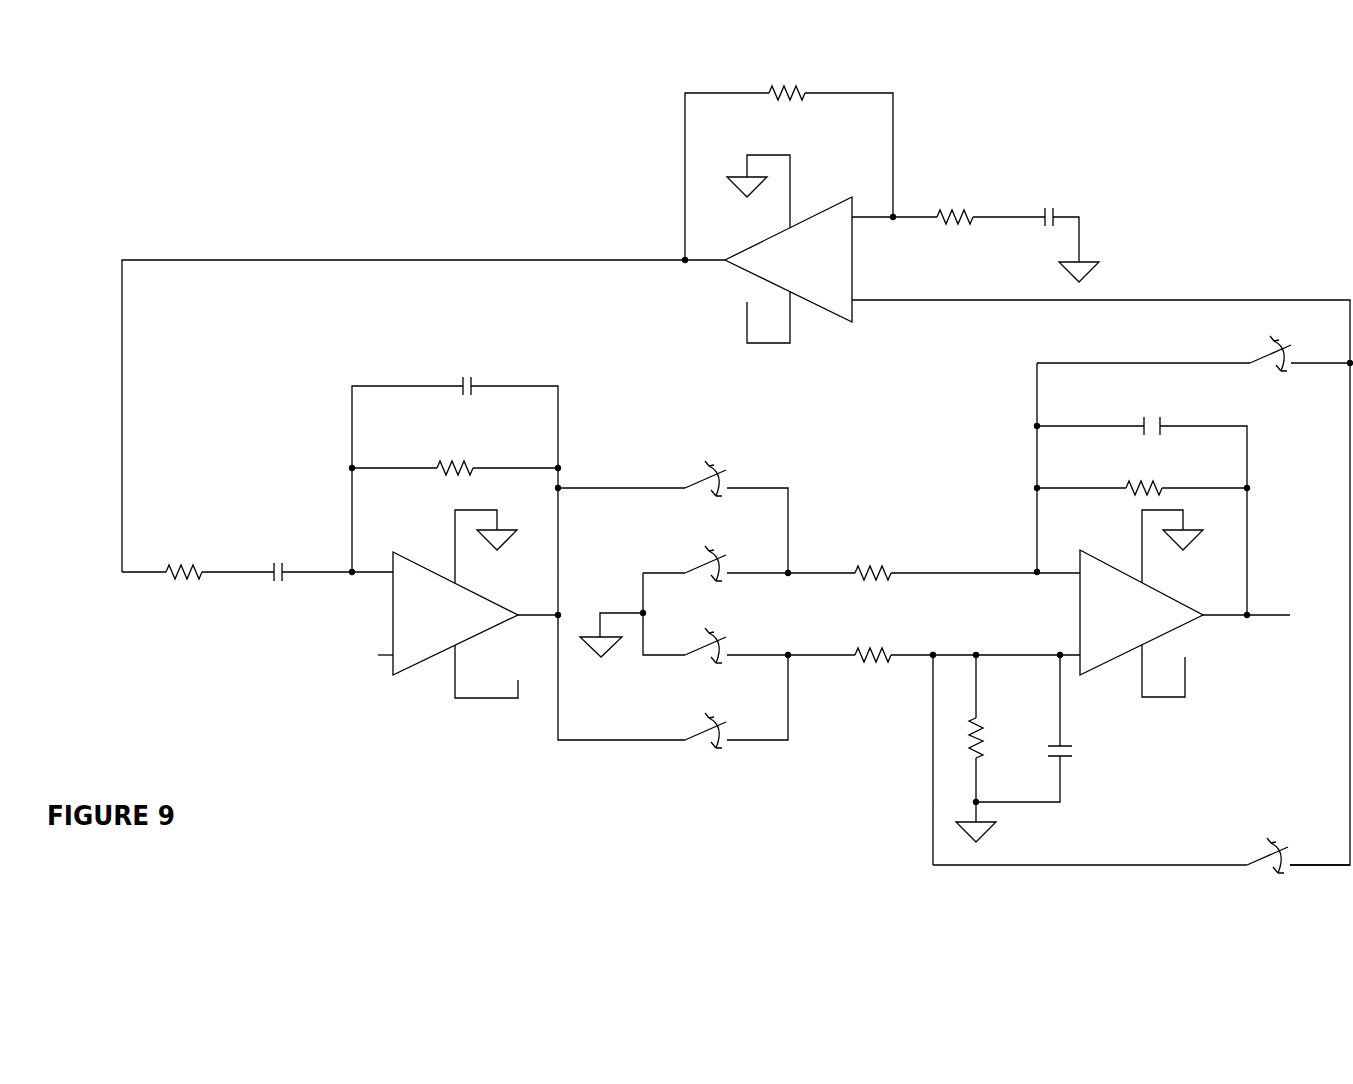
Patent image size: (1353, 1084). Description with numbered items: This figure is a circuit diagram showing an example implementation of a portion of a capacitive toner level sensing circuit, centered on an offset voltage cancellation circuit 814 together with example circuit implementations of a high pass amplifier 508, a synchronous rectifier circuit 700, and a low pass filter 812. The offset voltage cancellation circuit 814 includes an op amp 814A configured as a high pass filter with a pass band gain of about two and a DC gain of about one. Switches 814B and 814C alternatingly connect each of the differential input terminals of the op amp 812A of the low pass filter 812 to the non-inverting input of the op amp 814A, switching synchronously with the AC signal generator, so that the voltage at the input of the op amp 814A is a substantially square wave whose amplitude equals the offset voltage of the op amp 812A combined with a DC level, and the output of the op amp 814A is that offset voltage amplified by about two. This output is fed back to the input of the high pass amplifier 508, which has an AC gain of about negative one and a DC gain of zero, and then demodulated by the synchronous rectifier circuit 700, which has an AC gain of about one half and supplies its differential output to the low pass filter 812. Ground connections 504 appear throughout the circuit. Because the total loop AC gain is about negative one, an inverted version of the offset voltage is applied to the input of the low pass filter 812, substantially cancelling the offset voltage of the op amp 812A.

The offset voltage cancellation circuit 814 is at (617, 177).
The op amp 814A is at (867, 337).
The switch 814B is at (1278, 320).
The switch 814C is at (1223, 873).
The ground 504 is at (1100, 245).
The high pass amplifier 508 is at (330, 695).
The synchronous rectifier circuit 700 is at (598, 768).
The low pass filter 812 is at (1240, 766).
The op amp 812A is at (1205, 658).